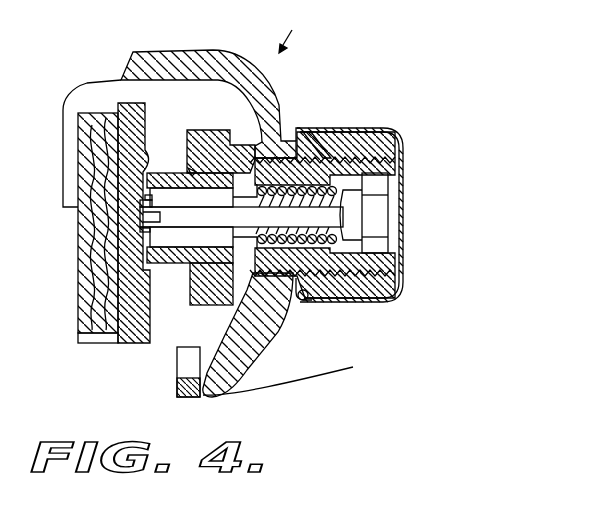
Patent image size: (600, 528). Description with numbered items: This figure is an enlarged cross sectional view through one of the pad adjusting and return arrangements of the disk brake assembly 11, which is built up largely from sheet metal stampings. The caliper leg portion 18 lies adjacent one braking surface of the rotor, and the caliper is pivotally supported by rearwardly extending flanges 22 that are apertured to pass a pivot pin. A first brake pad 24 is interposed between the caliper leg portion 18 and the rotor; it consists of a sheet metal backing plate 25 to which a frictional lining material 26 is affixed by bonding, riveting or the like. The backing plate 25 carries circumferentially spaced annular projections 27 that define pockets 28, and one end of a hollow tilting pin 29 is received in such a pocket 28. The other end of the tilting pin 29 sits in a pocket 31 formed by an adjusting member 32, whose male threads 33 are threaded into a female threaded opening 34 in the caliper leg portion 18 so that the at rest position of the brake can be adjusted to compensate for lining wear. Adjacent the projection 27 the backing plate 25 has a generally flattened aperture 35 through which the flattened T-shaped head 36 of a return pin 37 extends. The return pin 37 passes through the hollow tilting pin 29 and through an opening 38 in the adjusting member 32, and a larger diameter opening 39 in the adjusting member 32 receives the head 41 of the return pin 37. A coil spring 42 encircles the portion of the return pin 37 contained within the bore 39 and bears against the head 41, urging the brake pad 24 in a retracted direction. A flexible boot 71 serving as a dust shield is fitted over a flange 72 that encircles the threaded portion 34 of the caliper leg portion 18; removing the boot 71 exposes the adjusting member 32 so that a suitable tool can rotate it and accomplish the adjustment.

The disk brake assembly 11 is at (285, 27).
The leg portion 18 is at (248, 362).
The flanges 22 is at (345, 303).
The first brake pad 24 is at (140, 346).
The backing plate 25 is at (128, 338).
The frictional lining material 26 is at (100, 303).
The annular projections 27 is at (148, 158).
The pockets 28 is at (150, 197).
The tilting pin 29 is at (170, 180).
The pocket 31 is at (200, 162).
The adjusting member 32 is at (188, 170).
The male threads 33 is at (386, 172).
The female threaded opening 34 is at (297, 284).
The flattened aperture 35 is at (140, 230).
The T-shaped head 36 is at (160, 217).
The return pin 37 is at (187, 226).
The opening 38 is at (213, 294).
The larger diameter opening 39 is at (362, 140).
The head 41 is at (353, 214).
The coil spring 42 is at (337, 246).
The flexible boot 71 is at (344, 128).
The flange 72 is at (336, 130).